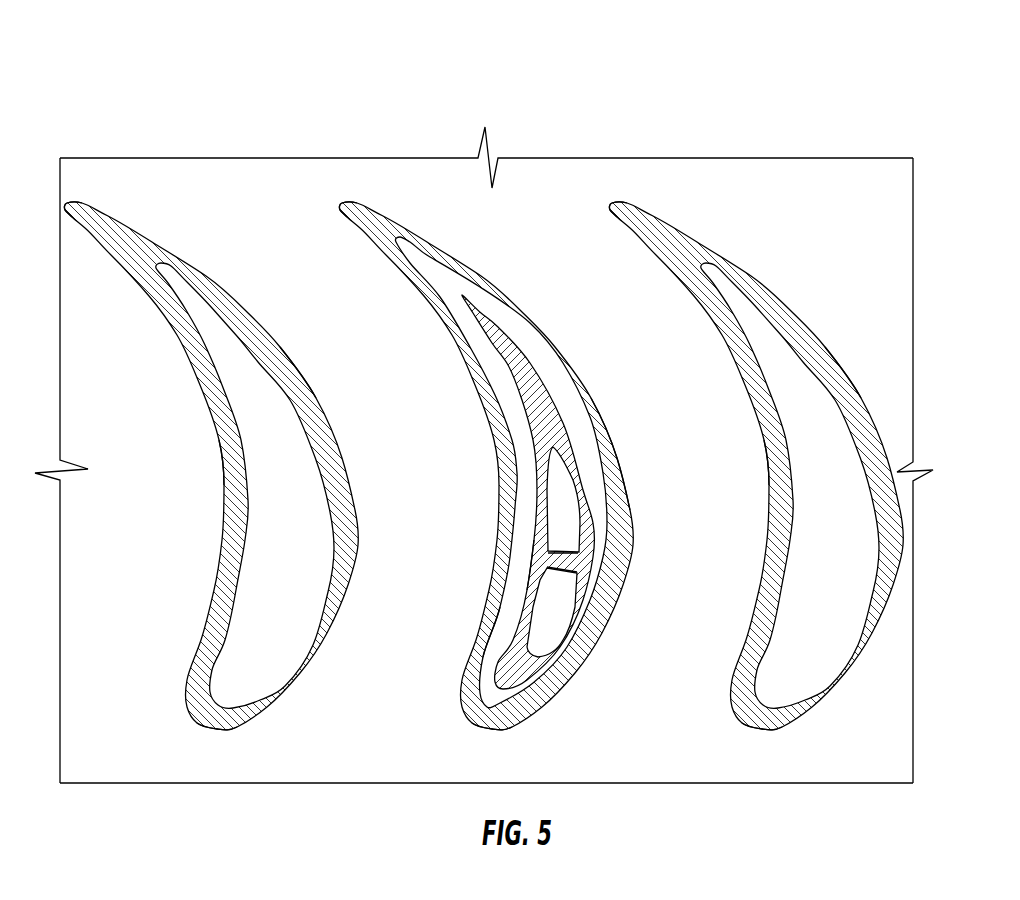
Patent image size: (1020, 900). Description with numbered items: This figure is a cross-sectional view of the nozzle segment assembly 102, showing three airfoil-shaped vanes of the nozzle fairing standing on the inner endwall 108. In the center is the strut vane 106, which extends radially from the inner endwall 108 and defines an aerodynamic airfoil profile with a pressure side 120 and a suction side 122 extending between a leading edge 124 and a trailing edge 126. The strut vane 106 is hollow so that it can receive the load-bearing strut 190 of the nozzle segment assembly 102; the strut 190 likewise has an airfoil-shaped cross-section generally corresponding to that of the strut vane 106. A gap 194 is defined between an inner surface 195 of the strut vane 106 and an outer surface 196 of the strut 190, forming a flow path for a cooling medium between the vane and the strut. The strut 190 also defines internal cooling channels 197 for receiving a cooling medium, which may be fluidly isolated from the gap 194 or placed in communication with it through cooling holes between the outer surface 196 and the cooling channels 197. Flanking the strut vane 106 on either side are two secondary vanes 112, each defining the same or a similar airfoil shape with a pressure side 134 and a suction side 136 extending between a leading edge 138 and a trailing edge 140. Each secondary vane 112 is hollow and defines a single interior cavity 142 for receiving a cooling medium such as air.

The nozzle segment assembly 102 is at (216, 74).
The strut vane 106 is at (444, 230).
The inner endwall 108 is at (90, 770).
The secondary vane 112 is at (484, 441).
The pressure side 120 is at (496, 490).
The suction side 122 is at (620, 467).
The leading edge 124 is at (479, 728).
The trailing edge 126 is at (340, 207).
The pressure side 134 is at (223, 512).
The suction side 136 is at (303, 378).
The leading edge 138 is at (205, 728).
The trailing edge 140 is at (72, 203).
The interior cavity 142 is at (304, 572).
The strut 190 is at (568, 492).
The gap 194 is at (515, 603).
The inner surface 195 is at (498, 637).
The outer surface 196 is at (533, 540).
The internal cooling channel 197 is at (558, 593).